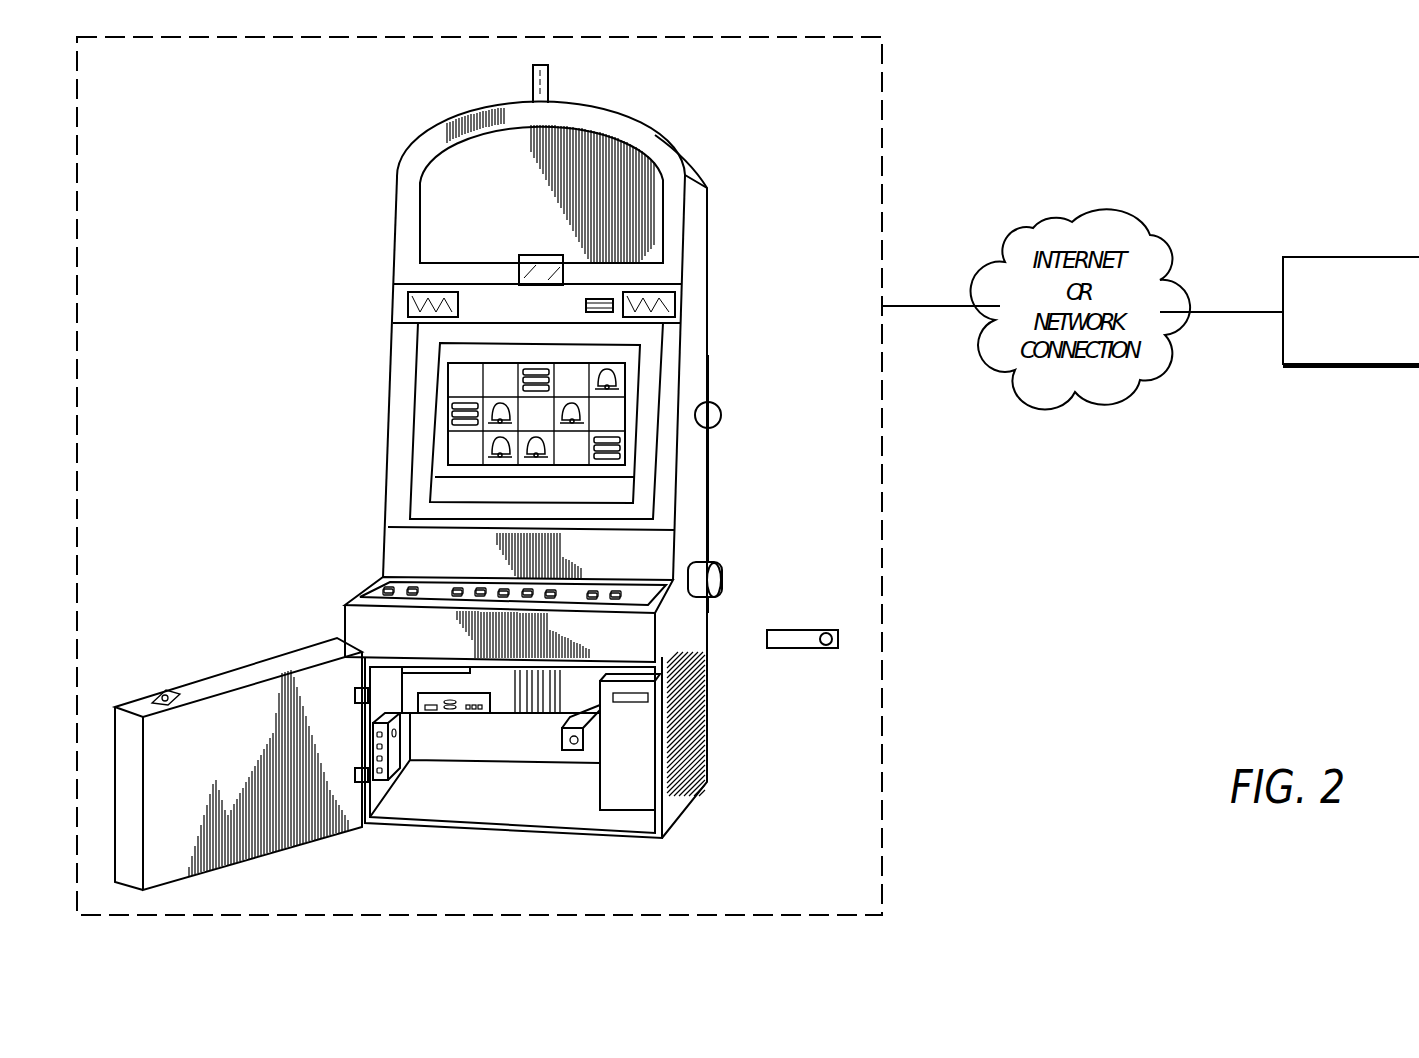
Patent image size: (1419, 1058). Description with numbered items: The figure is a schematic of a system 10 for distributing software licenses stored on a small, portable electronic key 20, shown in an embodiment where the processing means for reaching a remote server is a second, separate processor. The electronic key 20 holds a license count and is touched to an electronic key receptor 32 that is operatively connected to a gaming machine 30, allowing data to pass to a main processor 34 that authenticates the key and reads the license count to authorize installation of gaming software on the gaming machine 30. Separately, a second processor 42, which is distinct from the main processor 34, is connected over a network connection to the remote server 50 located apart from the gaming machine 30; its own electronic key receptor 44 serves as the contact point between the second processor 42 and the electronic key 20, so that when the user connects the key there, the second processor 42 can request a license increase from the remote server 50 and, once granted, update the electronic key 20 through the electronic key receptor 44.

The system 10 is at (898, 65).
The electronic key 20 is at (798, 630).
The gaming machine 30 is at (707, 252).
The electronic key receptor 32 is at (395, 770).
The main processor 34 is at (427, 668).
The second processor 42 is at (590, 730).
The electronic key receptor 44 is at (572, 750).
The remote server 50 is at (1352, 367).